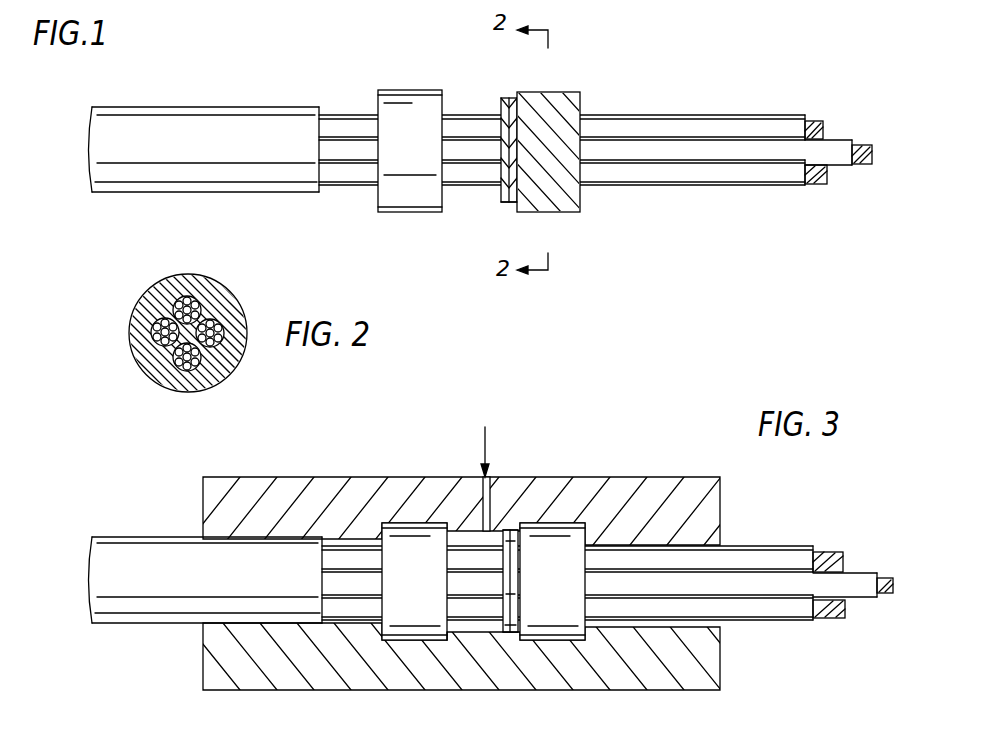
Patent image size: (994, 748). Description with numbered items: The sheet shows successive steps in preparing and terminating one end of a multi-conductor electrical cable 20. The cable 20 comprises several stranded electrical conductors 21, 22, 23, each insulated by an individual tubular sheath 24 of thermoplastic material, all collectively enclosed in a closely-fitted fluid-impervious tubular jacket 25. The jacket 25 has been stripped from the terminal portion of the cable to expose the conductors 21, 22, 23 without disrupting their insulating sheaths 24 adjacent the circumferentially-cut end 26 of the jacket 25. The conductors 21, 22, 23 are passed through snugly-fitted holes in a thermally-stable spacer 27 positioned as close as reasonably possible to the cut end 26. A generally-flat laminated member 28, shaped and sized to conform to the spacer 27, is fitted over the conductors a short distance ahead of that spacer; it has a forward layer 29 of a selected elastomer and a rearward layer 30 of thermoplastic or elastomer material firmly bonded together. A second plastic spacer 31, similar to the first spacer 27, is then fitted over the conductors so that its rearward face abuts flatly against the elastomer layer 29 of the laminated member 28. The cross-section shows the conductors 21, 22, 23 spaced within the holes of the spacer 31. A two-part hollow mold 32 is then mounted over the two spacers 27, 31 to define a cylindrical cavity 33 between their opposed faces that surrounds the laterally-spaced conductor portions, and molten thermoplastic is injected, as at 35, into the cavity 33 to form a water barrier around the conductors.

In FIG. 1, the multi-conductor electrical cable 20 is at (320, 98).
In FIG. 3, the multi-conductor electrical cable 20 is at (146, 530).
In FIG. 1, the electrical conductor 21 is at (826, 186).
In FIG. 2, the electrical conductor 21 is at (182, 369).
In FIG. 3, the electrical conductor 21 is at (838, 620).
In FIG. 1, the electrical conductor 22 is at (868, 142).
In FIG. 2, the electrical conductor 22 is at (222, 327).
In FIG. 3, the electrical conductor 22 is at (880, 572).
In FIG. 1, the electrical conductor 23 is at (812, 120).
In FIG. 2, the electrical conductor 23 is at (192, 299).
In FIG. 3, the electrical conductor 23 is at (815, 548).
In FIG. 1, the insulating sheath 24 is at (806, 188).
In FIG. 3, the insulating sheath 24 is at (811, 627).
In FIG. 1, the tubular jacket 25 is at (153, 186).
In FIG. 1, the cut end 26 is at (321, 192).
In FIG. 1, the spacer 27 is at (404, 100).
In FIG. 3, the spacer 27 is at (398, 597).
In FIG. 1, the laminated member 28 is at (507, 204).
In FIG. 3, the laminated member 28 is at (520, 525).
In FIG. 1, the forward layer 29 is at (514, 97).
In FIG. 3, the forward layer 29 is at (517, 634).
In FIG. 1, the rearward layer 30 is at (508, 97).
In FIG. 3, the rearward layer 30 is at (508, 530).
In FIG. 1, the second spacer 31 is at (582, 212).
In FIG. 2, the second spacer 31 is at (232, 366).
In FIG. 3, the second spacer 31 is at (542, 597).
In FIG. 3, the mold 32 is at (240, 690).
In FIG. 3, the cavity 33 is at (455, 636).
In FIG. 3, the injection of molten thermoplastic 35 is at (485, 427).